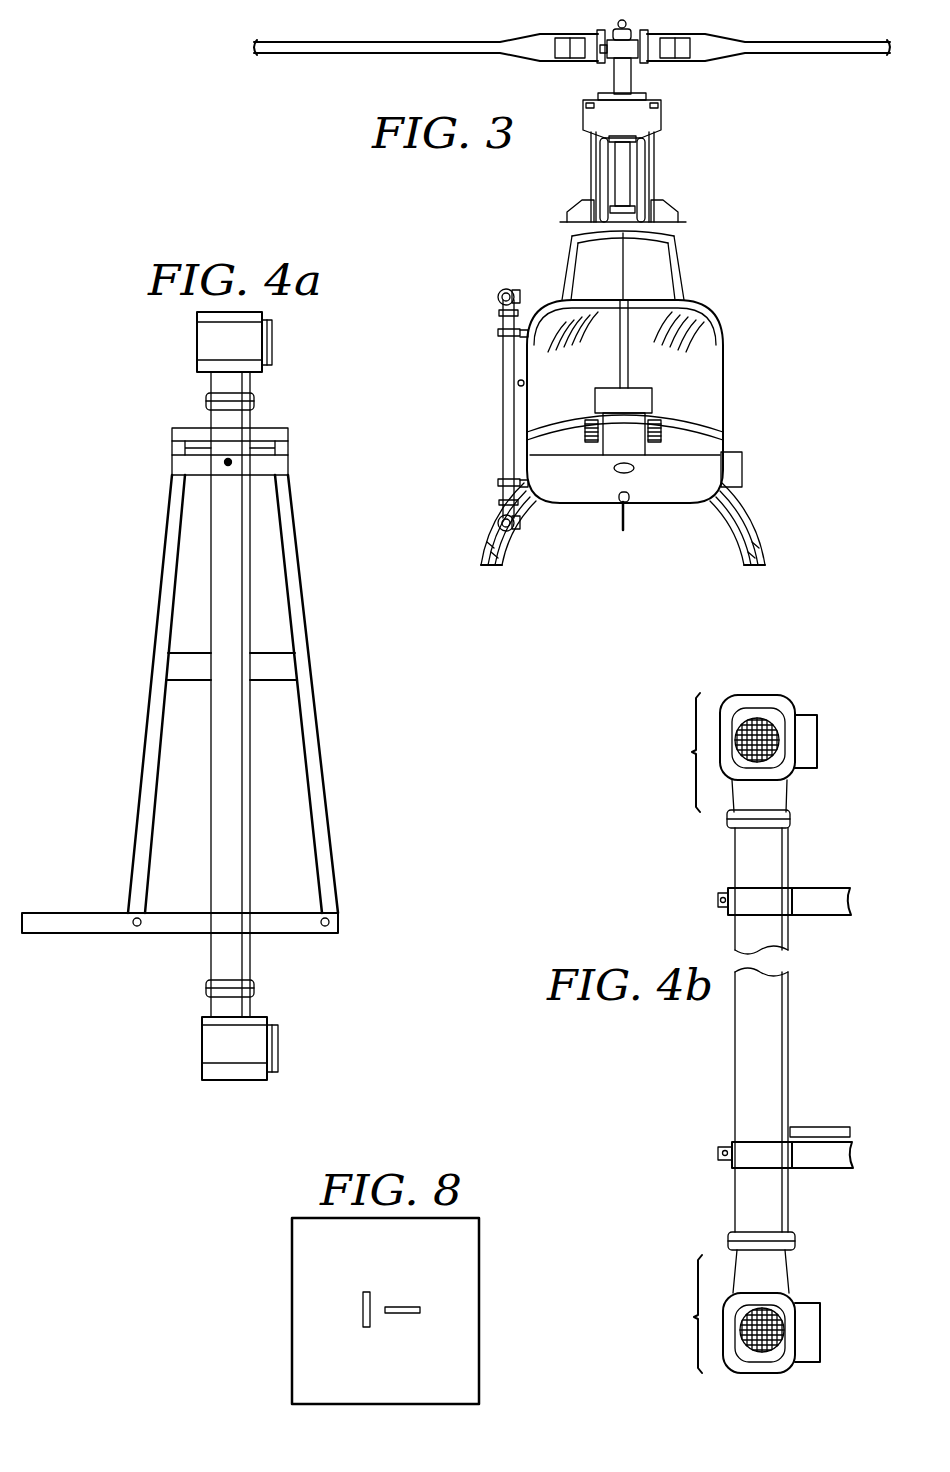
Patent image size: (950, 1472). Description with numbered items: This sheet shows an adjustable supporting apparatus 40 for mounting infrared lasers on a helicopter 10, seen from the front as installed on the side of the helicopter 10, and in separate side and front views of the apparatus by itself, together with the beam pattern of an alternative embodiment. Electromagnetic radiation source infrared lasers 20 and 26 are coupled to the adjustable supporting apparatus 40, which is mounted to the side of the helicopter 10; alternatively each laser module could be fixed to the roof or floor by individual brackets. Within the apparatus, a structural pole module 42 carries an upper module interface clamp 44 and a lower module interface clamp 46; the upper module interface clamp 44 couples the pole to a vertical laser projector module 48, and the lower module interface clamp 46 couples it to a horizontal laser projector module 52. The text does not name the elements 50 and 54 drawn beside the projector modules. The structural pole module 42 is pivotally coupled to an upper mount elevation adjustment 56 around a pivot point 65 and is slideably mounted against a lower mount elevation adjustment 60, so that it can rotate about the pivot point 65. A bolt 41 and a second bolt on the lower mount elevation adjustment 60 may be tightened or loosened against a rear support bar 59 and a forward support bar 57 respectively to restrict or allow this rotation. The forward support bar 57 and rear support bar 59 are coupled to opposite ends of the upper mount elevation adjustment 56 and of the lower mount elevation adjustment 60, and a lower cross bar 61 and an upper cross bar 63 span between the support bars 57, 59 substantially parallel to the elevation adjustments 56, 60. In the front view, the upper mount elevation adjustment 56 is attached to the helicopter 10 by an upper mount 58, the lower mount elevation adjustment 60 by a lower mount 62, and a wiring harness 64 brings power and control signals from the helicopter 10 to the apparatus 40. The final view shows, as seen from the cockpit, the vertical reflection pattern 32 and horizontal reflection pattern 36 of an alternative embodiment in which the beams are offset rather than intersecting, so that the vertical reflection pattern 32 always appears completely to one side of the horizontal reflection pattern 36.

In FIG. 3, the helicopter 10 is at (705, 318).
In FIG. 3, the infrared laser 20 is at (497, 520).
In FIG. 3, the infrared laser 26 is at (497, 293).
In FIG. 8, the vertical reflection pattern 32 is at (360, 1305).
In FIG. 8, the horizontal reflection pattern 36 is at (400, 1306).
In FIG. 3, the adjustable supporting apparatus 40 is at (500, 407).
In FIG. 4A, the adjustable supporting apparatus 40 is at (143, 520).
In FIG. 4B, the adjustable supporting apparatus 40 is at (614, 880).
In FIG. 4A, the bolt 41 is at (143, 918).
In FIG. 4A, the structural pole module 42 is at (252, 955).
In FIG. 4B, the structural pole module 42 is at (737, 1065).
In FIG. 4A, the upper module interface clamp 44 is at (252, 402).
In FIG. 4B, the upper module interface clamp 44 is at (785, 820).
In FIG. 4A, the lower module interface clamp 46 is at (254, 990).
In FIG. 4B, the lower module interface clamp 46 is at (795, 1243).
In FIG. 4A, the vertical laser projector module 48 is at (197, 338).
In FIG. 4B, the vertical laser projector module 48 is at (693, 752).
In FIG. 4A, the upper camera connector 50 is at (275, 342).
In FIG. 4A, the horizontal laser projector module 52 is at (202, 1050).
In FIG. 4B, the horizontal laser projector module 52 is at (695, 1317).
In FIG. 4A, the lower camera connector 54 is at (278, 1050).
In FIG. 4A, the upper mount elevation adjustment 56 is at (288, 465).
In FIG. 4B, the upper mount elevation adjustment 56 is at (745, 893).
In FIG. 4A, the forward support bar 57 is at (305, 612).
In FIG. 4B, the upper mount 58 is at (815, 893).
In FIG. 4A, the rear support bar 59 is at (157, 610).
In FIG. 4A, the lower mount elevation adjustment 60 is at (338, 925).
In FIG. 4B, the lower mount elevation adjustment 60 is at (750, 1147).
In FIG. 4A, the lower cross bar 61 is at (194, 683).
In FIG. 4B, the lower mount 62 is at (815, 1170).
In FIG. 4A, the upper cross bar 63 is at (190, 428).
In FIG. 4B, the wiring harness 64 is at (818, 1128).
In FIG. 4A, the pivot point 65 is at (228, 466).